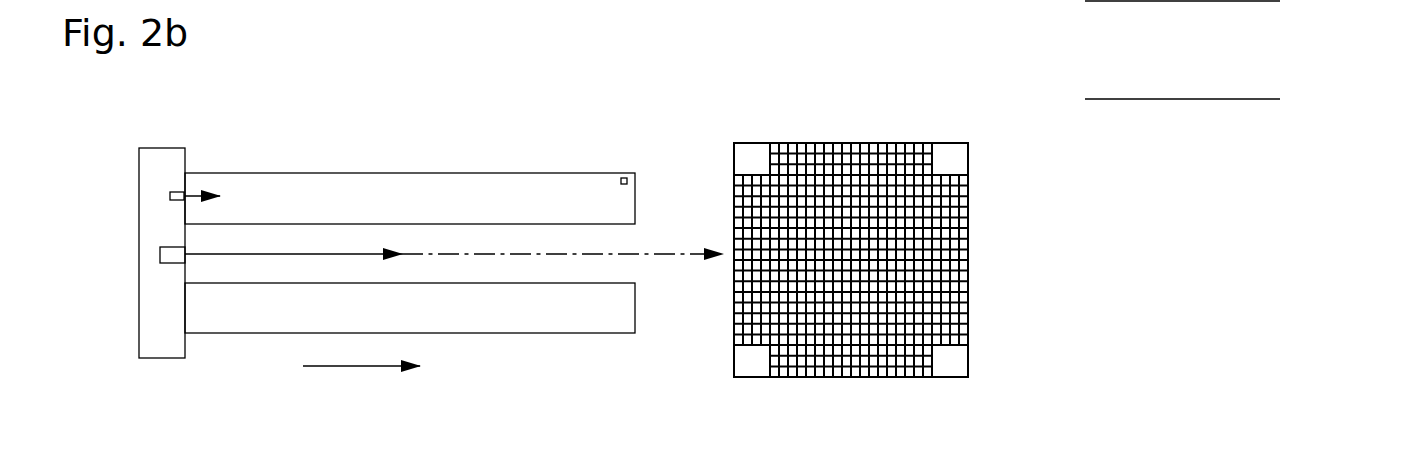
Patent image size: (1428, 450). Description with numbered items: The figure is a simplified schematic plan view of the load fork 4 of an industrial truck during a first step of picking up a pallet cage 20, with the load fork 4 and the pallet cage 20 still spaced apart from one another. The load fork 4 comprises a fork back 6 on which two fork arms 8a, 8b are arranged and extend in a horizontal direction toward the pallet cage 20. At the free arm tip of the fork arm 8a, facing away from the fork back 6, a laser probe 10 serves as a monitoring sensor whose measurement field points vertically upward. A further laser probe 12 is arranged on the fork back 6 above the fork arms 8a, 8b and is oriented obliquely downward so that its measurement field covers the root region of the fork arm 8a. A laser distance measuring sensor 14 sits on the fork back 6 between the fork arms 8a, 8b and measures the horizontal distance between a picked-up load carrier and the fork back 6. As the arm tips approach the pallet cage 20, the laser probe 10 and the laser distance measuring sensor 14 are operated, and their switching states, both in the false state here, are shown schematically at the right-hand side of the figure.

The load fork 4 is at (220, 149).
The fork back 6 is at (165, 163).
The fork arm 8a is at (403, 197).
The fork arm 8b is at (451, 311).
The laser probe 10 is at (624, 178).
The laser probe 12 is at (171, 196).
The laser distance measuring sensor 14 is at (172, 263).
The pallet cage 20 is at (932, 228).